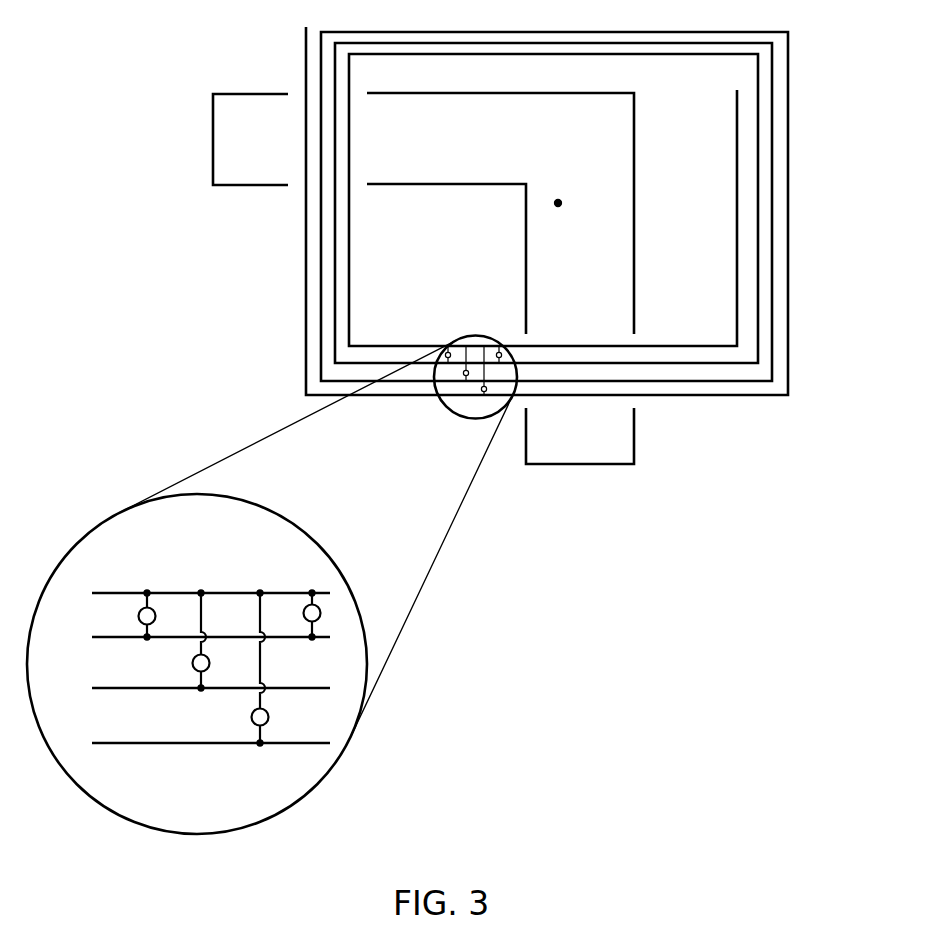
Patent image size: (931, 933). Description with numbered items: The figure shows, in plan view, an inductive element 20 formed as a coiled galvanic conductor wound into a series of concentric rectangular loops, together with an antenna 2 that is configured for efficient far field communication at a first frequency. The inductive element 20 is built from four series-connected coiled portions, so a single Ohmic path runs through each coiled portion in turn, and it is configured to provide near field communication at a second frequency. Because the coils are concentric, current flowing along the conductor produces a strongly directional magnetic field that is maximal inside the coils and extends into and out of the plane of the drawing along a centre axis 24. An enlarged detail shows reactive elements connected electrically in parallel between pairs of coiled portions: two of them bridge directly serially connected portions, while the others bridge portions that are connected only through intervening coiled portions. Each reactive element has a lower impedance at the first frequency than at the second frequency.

The inductive element 20 is at (501, 372).
The antenna 2 is at (653, 237).
The centre axis 24 is at (558, 203).